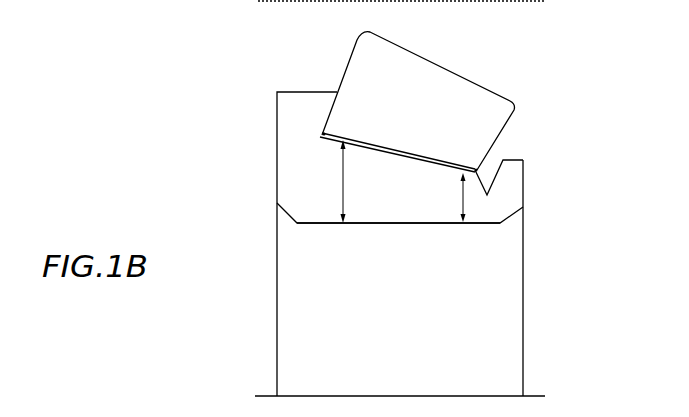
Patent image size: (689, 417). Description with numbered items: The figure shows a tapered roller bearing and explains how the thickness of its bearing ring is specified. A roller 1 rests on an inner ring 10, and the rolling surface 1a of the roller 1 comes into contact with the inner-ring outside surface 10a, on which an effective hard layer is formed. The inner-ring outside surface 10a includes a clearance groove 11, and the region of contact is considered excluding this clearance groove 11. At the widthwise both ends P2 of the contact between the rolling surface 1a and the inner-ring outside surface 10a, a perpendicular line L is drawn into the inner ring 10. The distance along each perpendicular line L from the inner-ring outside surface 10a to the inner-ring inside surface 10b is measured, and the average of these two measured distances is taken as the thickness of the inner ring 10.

The roller 1 is at (353, 52).
The rolling surface 1a is at (408, 153).
The inner ring 10 is at (300, 199).
The inner-ring outside surface 10a is at (408, 157).
The inner-ring inside surface 10b is at (335, 223).
The clearance groove 11 is at (493, 180).
The widthwise both ends P2 is at (326, 135).
The perpendicular line L is at (332, 181).